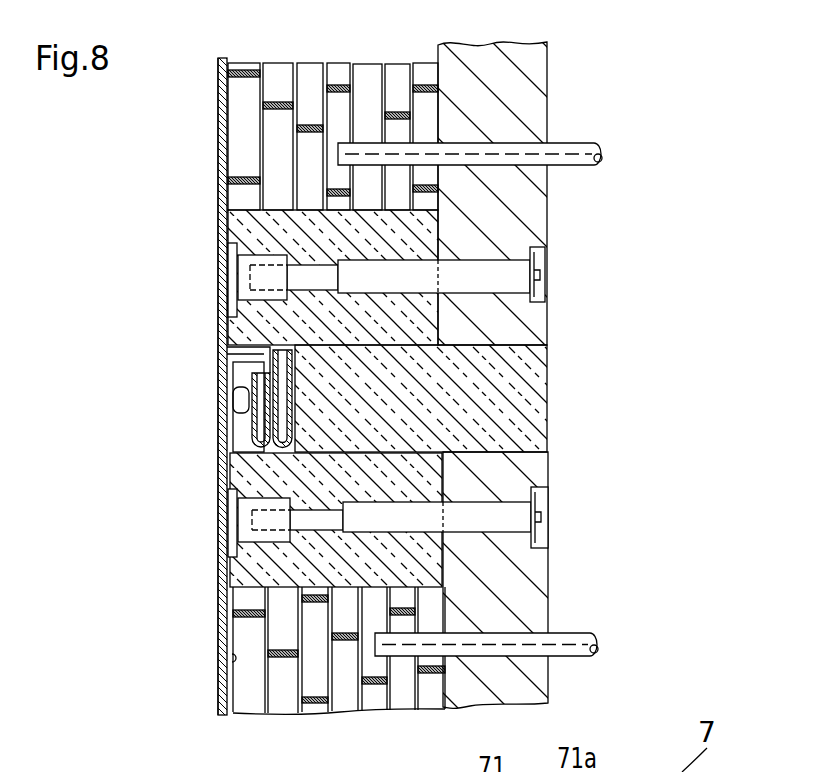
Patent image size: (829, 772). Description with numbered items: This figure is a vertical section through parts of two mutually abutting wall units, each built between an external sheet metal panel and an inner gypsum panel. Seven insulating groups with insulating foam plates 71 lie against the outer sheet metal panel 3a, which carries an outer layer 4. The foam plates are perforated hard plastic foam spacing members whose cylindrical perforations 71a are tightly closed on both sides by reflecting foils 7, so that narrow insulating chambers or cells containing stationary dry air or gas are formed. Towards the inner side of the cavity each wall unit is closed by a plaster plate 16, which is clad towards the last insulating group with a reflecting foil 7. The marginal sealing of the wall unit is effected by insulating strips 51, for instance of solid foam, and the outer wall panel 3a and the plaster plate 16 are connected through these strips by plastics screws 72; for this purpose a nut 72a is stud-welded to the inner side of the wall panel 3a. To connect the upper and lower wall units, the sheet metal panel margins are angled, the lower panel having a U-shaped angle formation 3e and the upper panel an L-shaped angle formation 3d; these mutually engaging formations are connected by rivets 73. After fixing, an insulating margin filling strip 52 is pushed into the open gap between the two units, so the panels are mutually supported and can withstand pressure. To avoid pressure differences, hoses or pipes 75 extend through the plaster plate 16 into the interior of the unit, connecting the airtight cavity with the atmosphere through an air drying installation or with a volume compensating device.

The outer sheet metal panel 3a is at (222, 172).
The L-shaped angle formation 3d is at (287, 390).
The U-shaped angle formation 3e is at (255, 420).
The outer layer 4 is at (217, 210).
The reflecting foils 7 is at (322, 63).
The plaster plate 16 is at (538, 100).
The insulating strips 51 is at (232, 330).
The insulating margin filling strip 52 is at (537, 390).
The insulating foam plates 71 is at (248, 180).
The cylindrical perforations 71a is at (343, 613).
The plastics screws 72 is at (415, 270).
The nut 72a is at (238, 280).
The rivets 73 is at (237, 395).
The hoses or pipes 75 is at (583, 153).